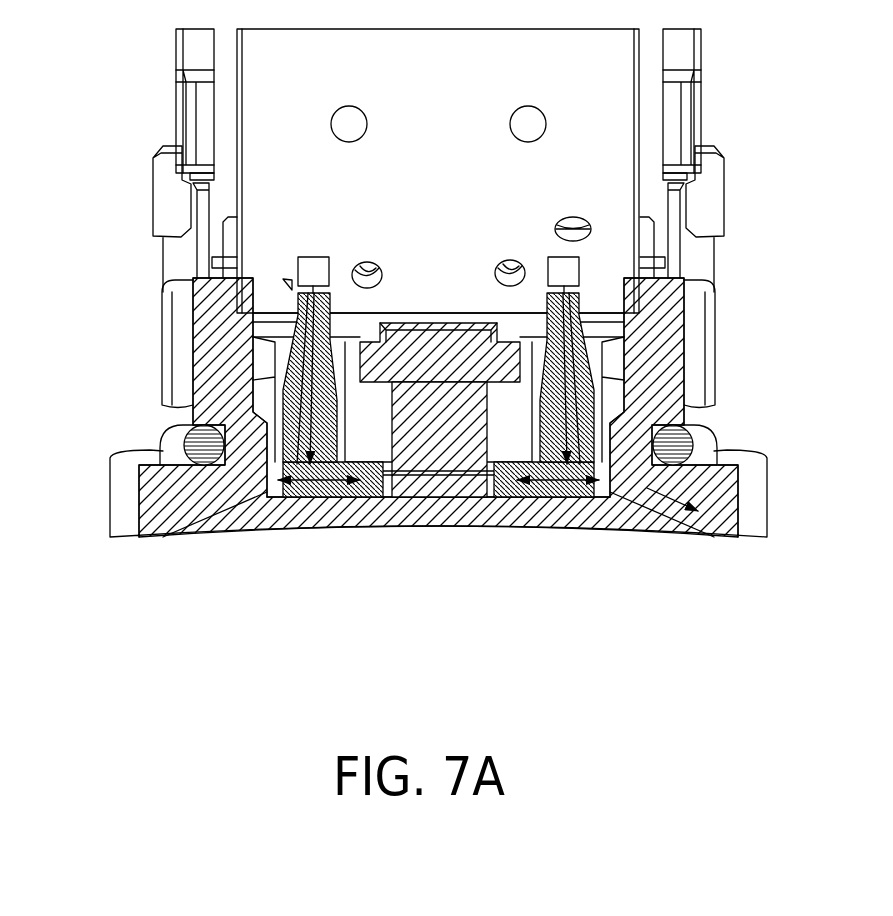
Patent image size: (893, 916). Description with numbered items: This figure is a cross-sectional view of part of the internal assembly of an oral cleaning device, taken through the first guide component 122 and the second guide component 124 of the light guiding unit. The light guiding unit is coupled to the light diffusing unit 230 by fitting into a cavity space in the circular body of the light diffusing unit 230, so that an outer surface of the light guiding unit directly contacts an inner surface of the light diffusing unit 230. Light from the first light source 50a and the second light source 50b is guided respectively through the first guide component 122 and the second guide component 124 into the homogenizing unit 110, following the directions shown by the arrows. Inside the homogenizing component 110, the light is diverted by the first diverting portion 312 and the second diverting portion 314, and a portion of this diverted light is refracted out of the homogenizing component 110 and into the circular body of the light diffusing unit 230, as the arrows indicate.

The first light source 50a is at (315, 257).
The second light source 50b is at (557, 256).
The homogenizing unit 110 is at (373, 493).
The first guide component 122 is at (588, 300).
The second guide component 124 is at (280, 353).
The light diffusing unit 230 is at (106, 499).
The first diverting portion 312 is at (565, 485).
The second diverting portion 314 is at (320, 490).